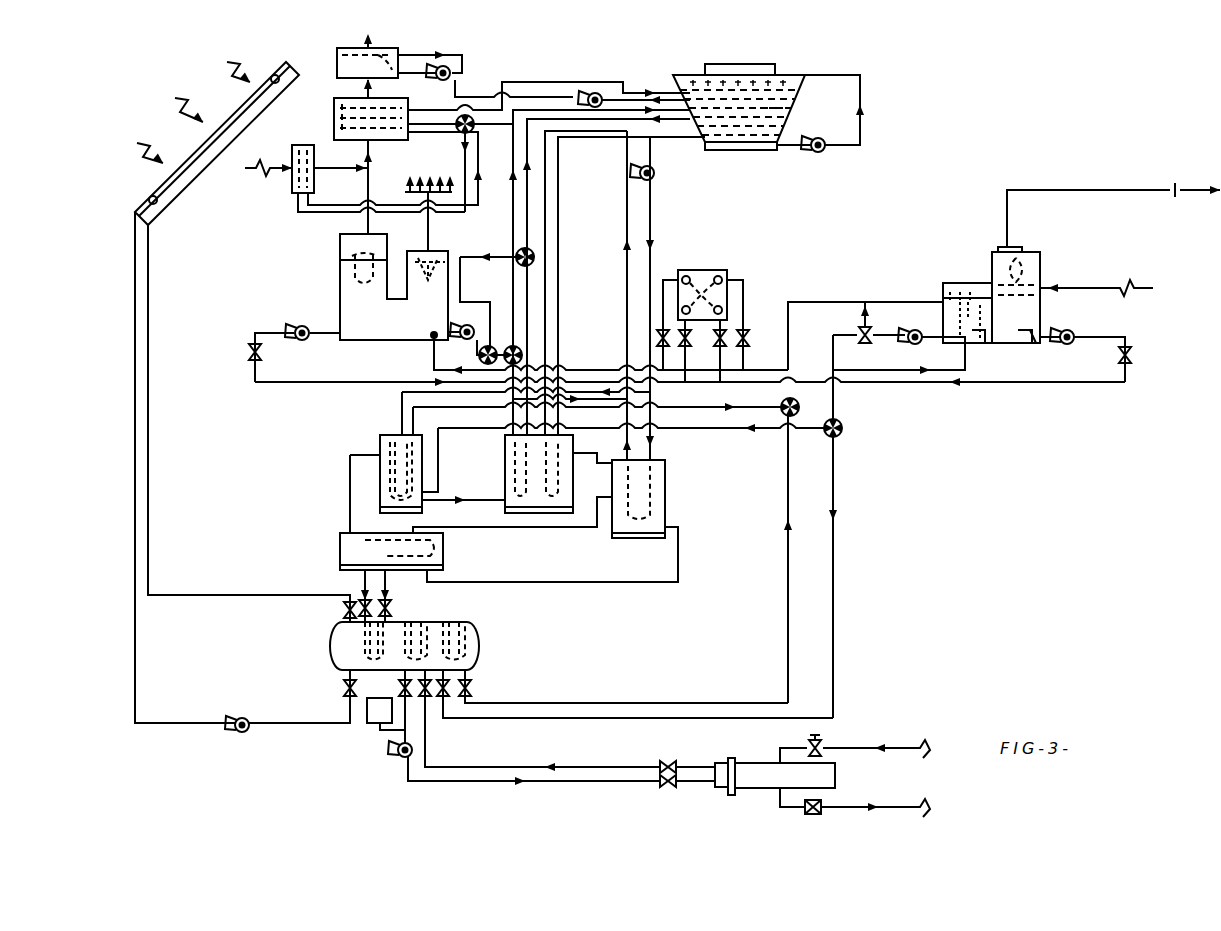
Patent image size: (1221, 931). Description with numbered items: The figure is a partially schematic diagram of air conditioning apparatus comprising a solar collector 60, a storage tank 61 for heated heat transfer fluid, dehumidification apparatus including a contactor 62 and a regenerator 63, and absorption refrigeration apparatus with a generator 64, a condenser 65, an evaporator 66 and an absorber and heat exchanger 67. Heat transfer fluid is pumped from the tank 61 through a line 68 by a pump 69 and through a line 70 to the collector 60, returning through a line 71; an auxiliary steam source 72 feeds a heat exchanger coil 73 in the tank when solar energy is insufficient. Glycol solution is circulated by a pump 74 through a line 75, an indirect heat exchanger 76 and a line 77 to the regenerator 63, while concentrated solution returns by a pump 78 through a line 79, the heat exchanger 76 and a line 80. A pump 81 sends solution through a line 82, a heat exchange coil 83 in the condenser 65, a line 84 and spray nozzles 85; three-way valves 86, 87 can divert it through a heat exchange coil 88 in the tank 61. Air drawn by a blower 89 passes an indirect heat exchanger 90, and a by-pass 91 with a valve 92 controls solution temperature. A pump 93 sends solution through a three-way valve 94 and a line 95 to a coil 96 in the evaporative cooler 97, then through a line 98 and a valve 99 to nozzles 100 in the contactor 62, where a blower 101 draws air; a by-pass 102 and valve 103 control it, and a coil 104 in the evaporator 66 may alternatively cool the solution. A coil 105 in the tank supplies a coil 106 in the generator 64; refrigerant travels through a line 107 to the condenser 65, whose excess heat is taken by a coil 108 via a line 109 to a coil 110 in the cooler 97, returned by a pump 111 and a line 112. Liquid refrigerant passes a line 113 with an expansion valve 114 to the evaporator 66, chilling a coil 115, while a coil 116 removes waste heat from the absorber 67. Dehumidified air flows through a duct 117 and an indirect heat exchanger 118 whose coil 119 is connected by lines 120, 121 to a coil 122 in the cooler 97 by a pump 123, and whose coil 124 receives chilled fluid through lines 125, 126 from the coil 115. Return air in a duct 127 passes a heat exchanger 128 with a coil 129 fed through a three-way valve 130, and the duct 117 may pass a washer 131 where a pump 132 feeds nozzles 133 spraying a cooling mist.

The solar collector 60 is at (197, 148).
The storage tank 61 is at (470, 620).
The contactor 62 is at (340, 279).
The regenerator 63 is at (1042, 268).
The generator 64 is at (340, 542).
The condenser 65 is at (374, 438).
The evaporator 66 is at (574, 442).
The absorber and heat exchanger 67 is at (667, 466).
The line 68 is at (300, 722).
The pump 69 is at (242, 716).
The line 70 is at (136, 622).
The line 71 is at (149, 561).
The auxiliary steam source 72 is at (758, 758).
The heat exchanger coil 73 is at (424, 622).
The pump 74 is at (296, 326).
The line 75 is at (296, 384).
The indirect heat exchanger 76 is at (700, 270).
The line 77 is at (744, 280).
The pump 78 is at (1066, 346).
The line 79 is at (994, 386).
The line 80 is at (664, 276).
The pump 81 is at (908, 344).
The line 82 is at (834, 368).
The heat exchange coil 83 is at (382, 446).
The line 84 is at (832, 304).
The spray nozzles 85 is at (967, 313).
The three-way valve 86 is at (842, 422).
The three-way valve 87 is at (782, 402).
The heat exchange coil 88 is at (456, 620).
The blower 89 is at (1018, 248).
The indirect heat exchanger 90 is at (996, 320).
The by-pass 91 is at (862, 316).
The valve 92 is at (874, 330).
The pump 93 is at (476, 328).
The three-way valve 94 is at (522, 352).
The line 95 is at (513, 218).
The heat exchange coil 96 is at (786, 113).
The evaporative cooler 97 is at (780, 140).
The line 98 is at (528, 194).
The valve 99 is at (516, 250).
The nozzles 100 is at (429, 239).
The blower 101 is at (352, 252).
The by-pass 102 is at (498, 290).
The valve 103 is at (479, 356).
The heat exchange coil 104 is at (513, 465).
The heat exchange coil 105 is at (362, 652).
The heat exchange coil 106 is at (432, 554).
The line 107 is at (350, 480).
The heat exchange coil 108 is at (414, 448).
The line 109 is at (627, 318).
The heat exchange coil 110 is at (745, 150).
The pump 111 is at (655, 180).
The line 112 is at (651, 207).
The line 113 is at (446, 498).
The expansion valve 114 is at (462, 502).
The heat exchange coil 115 is at (560, 480).
The heat exchange coil 116 is at (652, 490).
The duct 117 is at (368, 184).
The indirect heat exchanger 118 is at (340, 98).
The heat exchange coil 119 is at (340, 106).
The line 120 is at (450, 104).
The line 121 is at (546, 92).
The heat exchange coil 122 is at (790, 99).
The pump 123 is at (598, 92).
The heat exchange coil 124 is at (340, 126).
The line 125 is at (560, 136).
The line 126 is at (546, 162).
The duct 127 is at (272, 165).
The heat exchanger 128 is at (292, 185).
The heat exchange coil 129 is at (316, 160).
The three-way valve 130 is at (458, 129).
The humidifier or washer 131 is at (340, 62).
The pump 132 is at (442, 69).
The nozzles 133 is at (397, 63).